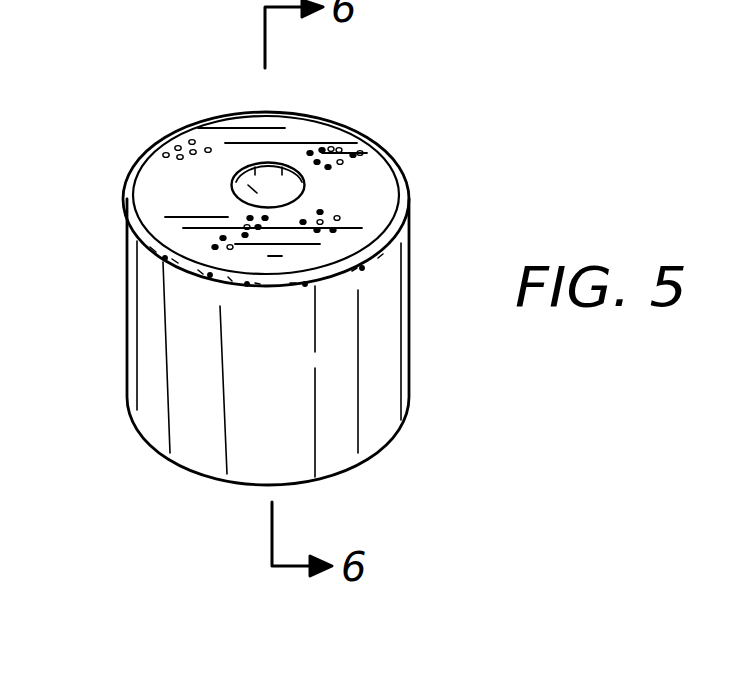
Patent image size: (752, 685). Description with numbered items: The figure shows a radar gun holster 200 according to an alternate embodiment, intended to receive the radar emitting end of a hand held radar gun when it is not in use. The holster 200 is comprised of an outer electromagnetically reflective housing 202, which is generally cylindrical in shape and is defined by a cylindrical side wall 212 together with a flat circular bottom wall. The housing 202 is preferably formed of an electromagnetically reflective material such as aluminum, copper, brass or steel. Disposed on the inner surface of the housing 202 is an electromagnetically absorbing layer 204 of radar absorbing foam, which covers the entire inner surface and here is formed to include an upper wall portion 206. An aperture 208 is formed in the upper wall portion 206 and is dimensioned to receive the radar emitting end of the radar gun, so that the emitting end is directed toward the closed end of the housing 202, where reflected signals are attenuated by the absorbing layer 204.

The radar gun holster 200 is at (440, 205).
The outer electromagnetically reflective housing 202 is at (412, 339).
The electromagnetically absorbing layer 204 is at (373, 133).
The upper wall portion 206 is at (255, 138).
The aperture 208 is at (232, 181).
The cylindrical side wall 212 is at (345, 400).